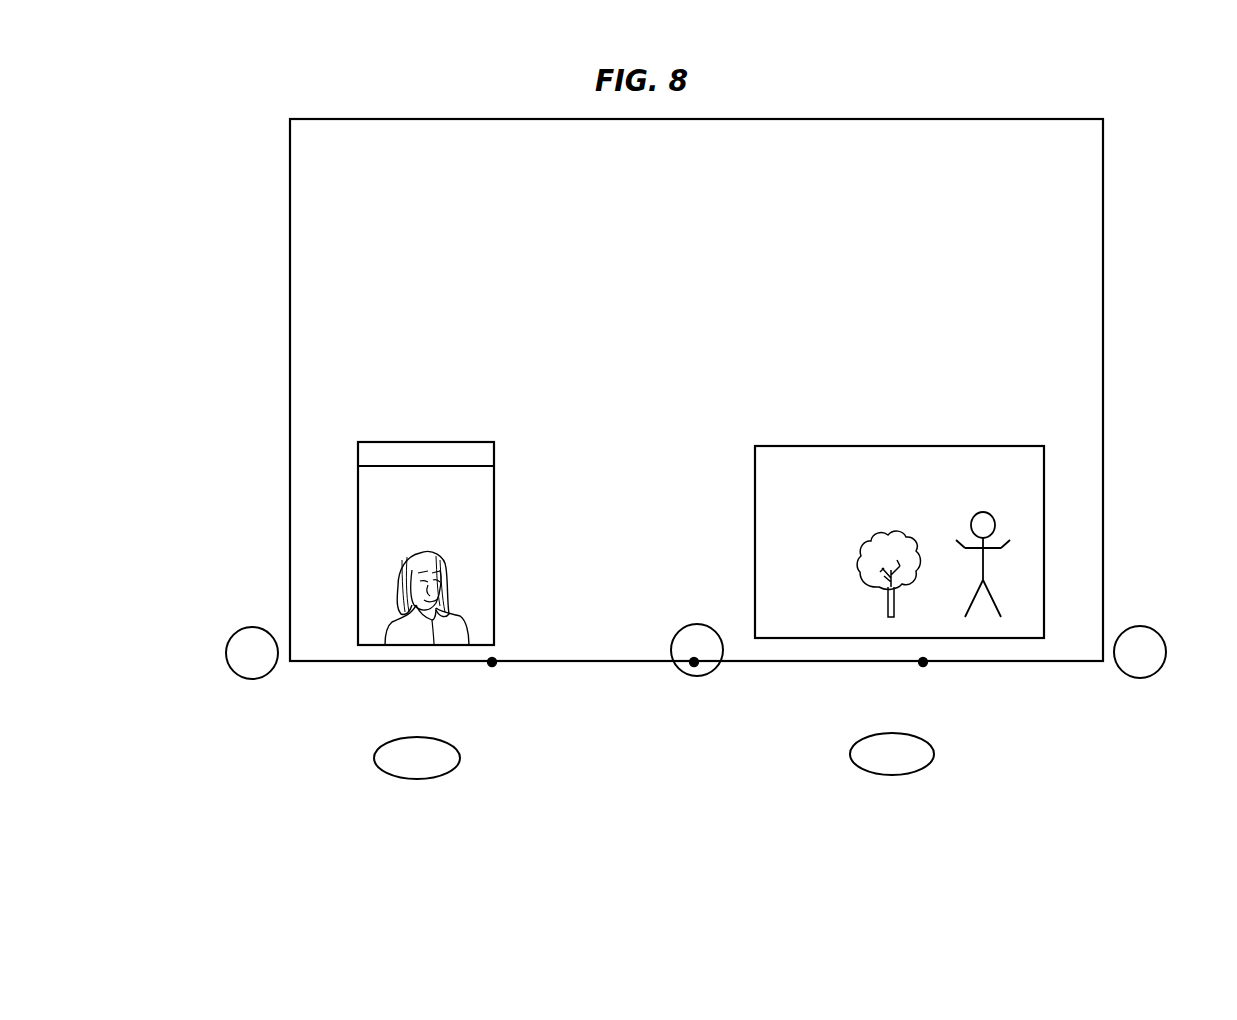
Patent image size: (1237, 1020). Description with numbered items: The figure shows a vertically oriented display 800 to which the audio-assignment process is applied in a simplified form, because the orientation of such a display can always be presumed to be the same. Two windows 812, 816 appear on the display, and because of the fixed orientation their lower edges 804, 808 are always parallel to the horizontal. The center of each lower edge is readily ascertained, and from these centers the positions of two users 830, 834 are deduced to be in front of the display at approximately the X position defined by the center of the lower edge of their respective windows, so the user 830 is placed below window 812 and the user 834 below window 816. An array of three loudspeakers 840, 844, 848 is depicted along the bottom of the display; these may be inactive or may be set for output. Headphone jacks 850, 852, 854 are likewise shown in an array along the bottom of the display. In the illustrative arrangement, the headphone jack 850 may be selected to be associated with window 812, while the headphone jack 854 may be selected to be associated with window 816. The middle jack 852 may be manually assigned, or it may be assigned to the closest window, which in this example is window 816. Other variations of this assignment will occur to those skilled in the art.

The vertically oriented display 800 is at (487, 152).
The lower edge of window 804 is at (422, 645).
The lower edge of window 808 is at (937, 638).
The window 812 is at (494, 542).
The window 816 is at (899, 446).
The user 830 is at (432, 738).
The user 834 is at (850, 753).
The loudspeaker 840 is at (252, 627).
The loudspeaker 844 is at (697, 676).
The loudspeaker 848 is at (1140, 626).
The headphone jack 850 is at (492, 666).
The headphone jack 852 is at (696, 664).
The headphone jack 854 is at (923, 666).